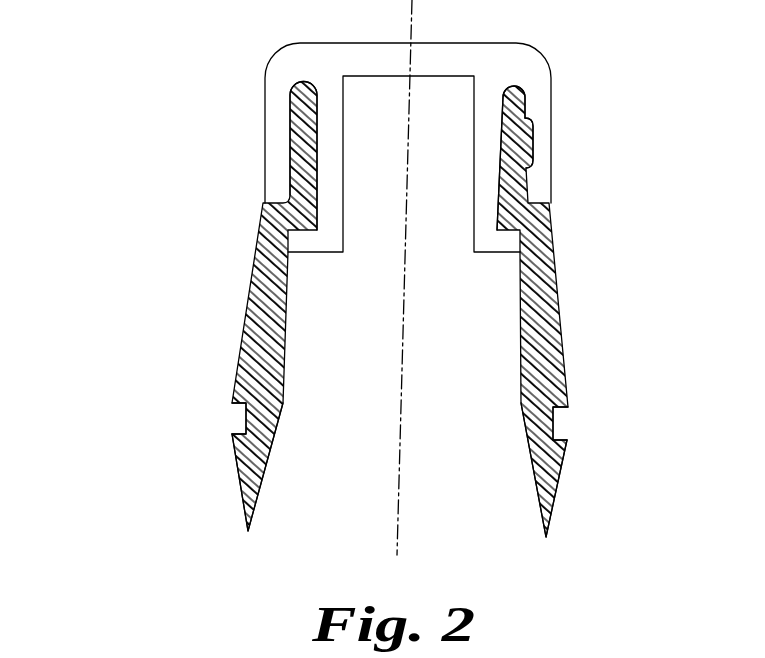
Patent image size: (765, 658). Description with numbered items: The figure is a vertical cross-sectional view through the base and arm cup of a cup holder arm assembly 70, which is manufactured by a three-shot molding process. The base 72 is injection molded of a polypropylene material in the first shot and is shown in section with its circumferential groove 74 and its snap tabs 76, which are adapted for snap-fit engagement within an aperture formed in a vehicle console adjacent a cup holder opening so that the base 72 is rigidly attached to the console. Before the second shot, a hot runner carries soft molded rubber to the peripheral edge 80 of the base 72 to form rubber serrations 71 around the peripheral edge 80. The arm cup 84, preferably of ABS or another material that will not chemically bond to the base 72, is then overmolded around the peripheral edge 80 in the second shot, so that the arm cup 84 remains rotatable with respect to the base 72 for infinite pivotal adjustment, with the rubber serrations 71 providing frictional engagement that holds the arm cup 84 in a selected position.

The cup holder arm assembly 70 is at (190, 349).
The rubber serrations 71 is at (536, 137).
The base 72 is at (252, 293).
The circumferential groove 74 is at (245, 422).
The snap tabs 76 is at (236, 466).
The peripheral edge 80 is at (288, 167).
The arm cup 84 is at (282, 88).